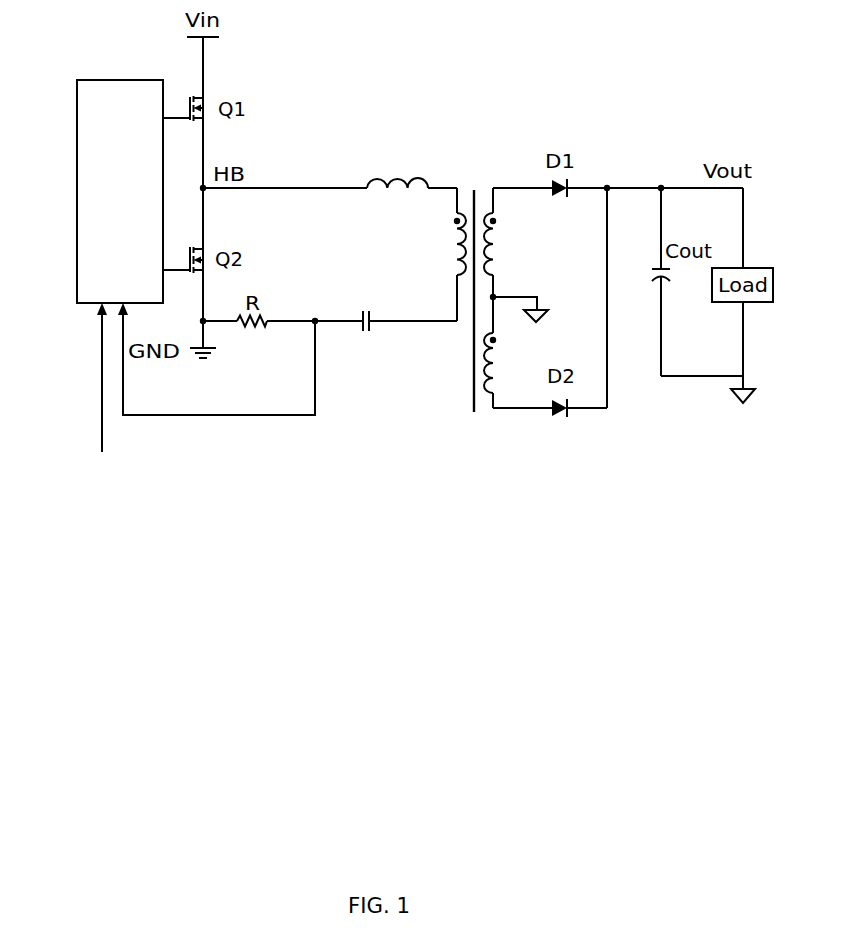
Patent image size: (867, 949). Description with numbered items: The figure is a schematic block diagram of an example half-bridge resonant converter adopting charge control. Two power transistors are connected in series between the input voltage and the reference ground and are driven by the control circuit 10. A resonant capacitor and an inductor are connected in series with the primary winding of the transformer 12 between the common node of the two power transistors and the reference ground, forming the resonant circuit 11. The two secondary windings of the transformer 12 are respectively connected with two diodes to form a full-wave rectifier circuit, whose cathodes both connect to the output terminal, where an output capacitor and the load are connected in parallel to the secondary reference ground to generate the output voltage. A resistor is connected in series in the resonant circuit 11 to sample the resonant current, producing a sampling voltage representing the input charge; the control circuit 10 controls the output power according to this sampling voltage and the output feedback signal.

The control circuit 10 is at (92, 303).
The resonant circuit 11 is at (353, 168).
The transformer 12 is at (479, 172).